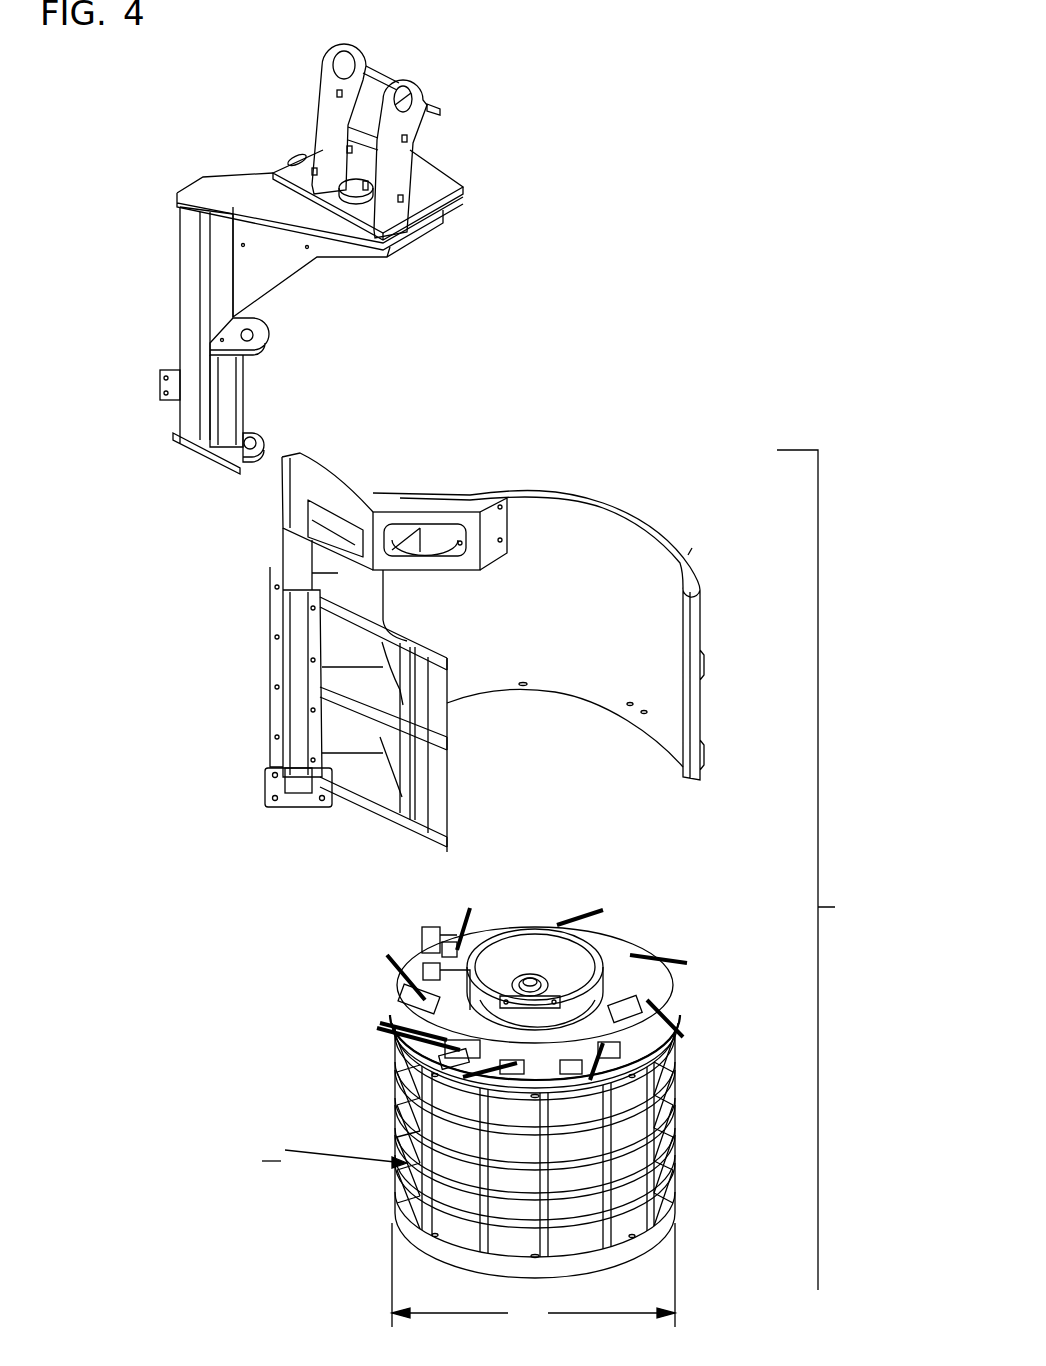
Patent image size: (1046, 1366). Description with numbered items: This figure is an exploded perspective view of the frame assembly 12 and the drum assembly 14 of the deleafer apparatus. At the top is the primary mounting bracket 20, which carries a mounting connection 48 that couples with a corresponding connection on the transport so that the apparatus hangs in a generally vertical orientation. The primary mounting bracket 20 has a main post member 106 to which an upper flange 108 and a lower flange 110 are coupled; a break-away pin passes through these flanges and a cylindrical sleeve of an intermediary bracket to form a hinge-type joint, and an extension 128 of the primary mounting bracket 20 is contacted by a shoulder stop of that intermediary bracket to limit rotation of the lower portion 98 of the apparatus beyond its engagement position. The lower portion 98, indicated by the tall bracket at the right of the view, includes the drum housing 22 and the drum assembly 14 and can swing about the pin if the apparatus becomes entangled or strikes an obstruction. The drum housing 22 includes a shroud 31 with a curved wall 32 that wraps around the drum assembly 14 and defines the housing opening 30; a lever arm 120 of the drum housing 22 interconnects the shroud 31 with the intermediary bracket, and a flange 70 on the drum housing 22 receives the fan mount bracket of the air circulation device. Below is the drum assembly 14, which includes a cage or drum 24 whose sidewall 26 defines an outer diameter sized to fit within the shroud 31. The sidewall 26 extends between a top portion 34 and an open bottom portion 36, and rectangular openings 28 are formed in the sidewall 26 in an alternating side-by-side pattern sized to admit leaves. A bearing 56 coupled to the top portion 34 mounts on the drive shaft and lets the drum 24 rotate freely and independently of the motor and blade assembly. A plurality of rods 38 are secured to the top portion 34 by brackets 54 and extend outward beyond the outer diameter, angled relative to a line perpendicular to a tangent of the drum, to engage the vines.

The frame assembly 12 is at (523, 372).
The drum assembly 14 is at (718, 904).
The primary mounting bracket 20 is at (245, 190).
The drum housing 22 is at (555, 492).
The drum 24 is at (523, 1118).
The sidewall 26 is at (660, 1118).
The openings 28 is at (503, 1187).
The housing opening 30 is at (445, 808).
The shroud 31 is at (660, 527).
The curved wall 32 is at (590, 672).
The top portion 34 is at (645, 988).
The bottom portion 36 is at (458, 1258).
The rods 38 is at (377, 1028).
The mounting connection 48 is at (405, 135).
The brackets 54 is at (612, 1052).
The bearing 56 is at (550, 990).
The flange 70 is at (290, 800).
The lower portion 98 is at (832, 870).
The main post member 106 is at (192, 272).
The upper flange 108 is at (262, 335).
The lower flange 110 is at (260, 438).
The lever arm 120 is at (378, 500).
The extension 128 is at (240, 357).